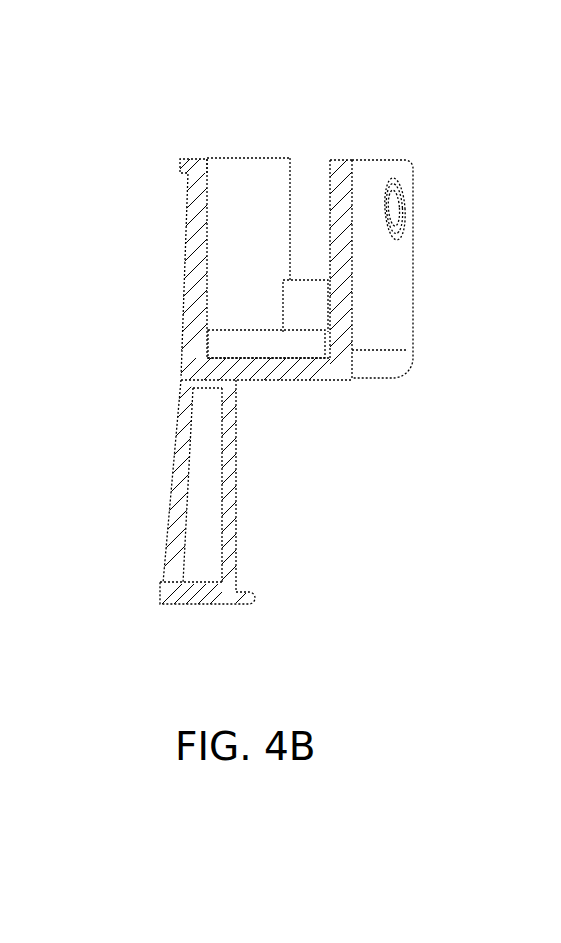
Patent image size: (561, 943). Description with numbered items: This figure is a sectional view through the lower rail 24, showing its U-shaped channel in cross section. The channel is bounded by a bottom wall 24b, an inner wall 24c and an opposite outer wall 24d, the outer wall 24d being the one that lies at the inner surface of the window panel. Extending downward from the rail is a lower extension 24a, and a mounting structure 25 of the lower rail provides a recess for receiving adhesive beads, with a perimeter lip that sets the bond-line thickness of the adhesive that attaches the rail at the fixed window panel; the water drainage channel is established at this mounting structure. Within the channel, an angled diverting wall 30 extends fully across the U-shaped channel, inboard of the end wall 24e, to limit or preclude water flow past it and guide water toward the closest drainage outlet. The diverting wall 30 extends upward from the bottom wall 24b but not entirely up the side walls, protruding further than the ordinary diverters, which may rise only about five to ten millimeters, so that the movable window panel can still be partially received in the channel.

The lower rail 24 is at (411, 139).
The lower extension 24a is at (207, 517).
The bottom wall 24b is at (265, 370).
The inner wall 24c is at (377, 273).
The outer wall 24d is at (197, 222).
The end wall 24e is at (310, 298).
The mounting structure 25 is at (152, 508).
The diverting wall 30 is at (252, 345).